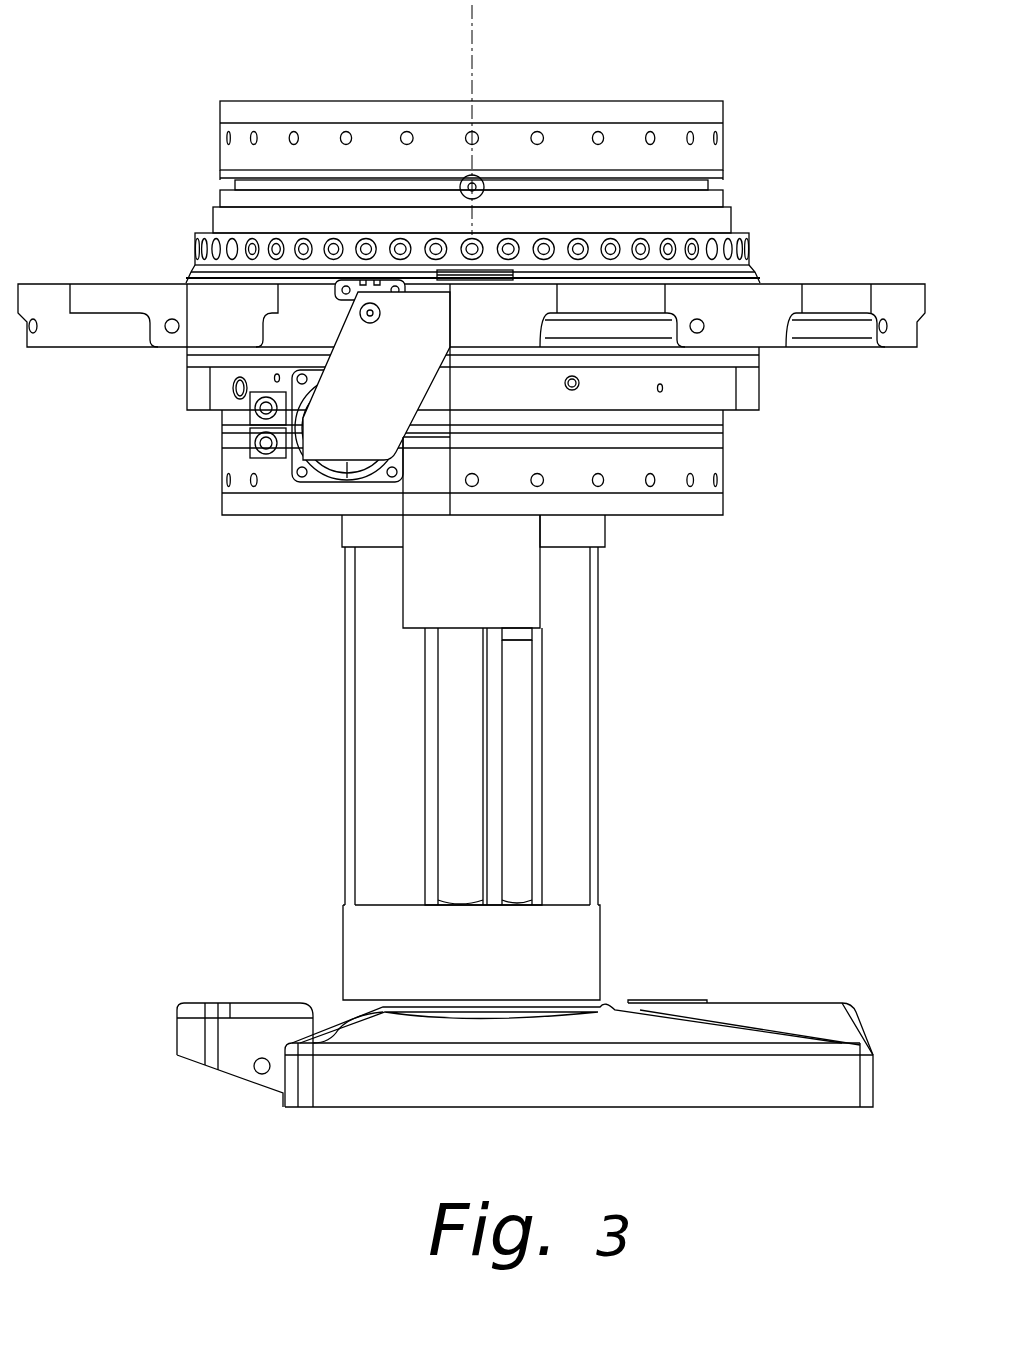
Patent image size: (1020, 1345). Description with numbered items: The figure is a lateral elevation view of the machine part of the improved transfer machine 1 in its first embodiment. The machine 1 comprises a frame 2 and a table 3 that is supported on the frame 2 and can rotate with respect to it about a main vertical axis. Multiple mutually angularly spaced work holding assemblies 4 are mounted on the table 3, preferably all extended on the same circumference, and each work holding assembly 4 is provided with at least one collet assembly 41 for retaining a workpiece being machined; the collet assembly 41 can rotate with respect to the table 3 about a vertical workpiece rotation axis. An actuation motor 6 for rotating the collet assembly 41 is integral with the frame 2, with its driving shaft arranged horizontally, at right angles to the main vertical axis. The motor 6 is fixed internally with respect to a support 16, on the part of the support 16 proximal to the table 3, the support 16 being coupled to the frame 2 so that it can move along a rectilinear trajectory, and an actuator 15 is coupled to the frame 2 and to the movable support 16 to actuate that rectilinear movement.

The transfer machine 1 is at (475, 554).
The frame 2 is at (345, 765).
The table 3 is at (886, 342).
The work holding assembly 4 is at (455, 270).
The collet assembly 41 is at (514, 278).
The actuator 15 is at (370, 283).
The support 16 is at (347, 418).
The actuation motor 6 is at (333, 462).